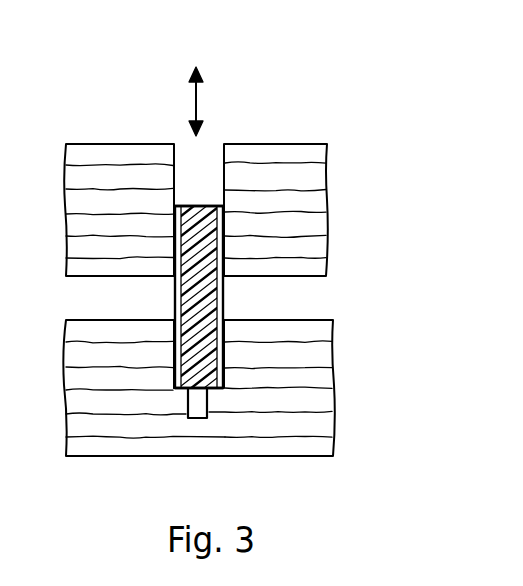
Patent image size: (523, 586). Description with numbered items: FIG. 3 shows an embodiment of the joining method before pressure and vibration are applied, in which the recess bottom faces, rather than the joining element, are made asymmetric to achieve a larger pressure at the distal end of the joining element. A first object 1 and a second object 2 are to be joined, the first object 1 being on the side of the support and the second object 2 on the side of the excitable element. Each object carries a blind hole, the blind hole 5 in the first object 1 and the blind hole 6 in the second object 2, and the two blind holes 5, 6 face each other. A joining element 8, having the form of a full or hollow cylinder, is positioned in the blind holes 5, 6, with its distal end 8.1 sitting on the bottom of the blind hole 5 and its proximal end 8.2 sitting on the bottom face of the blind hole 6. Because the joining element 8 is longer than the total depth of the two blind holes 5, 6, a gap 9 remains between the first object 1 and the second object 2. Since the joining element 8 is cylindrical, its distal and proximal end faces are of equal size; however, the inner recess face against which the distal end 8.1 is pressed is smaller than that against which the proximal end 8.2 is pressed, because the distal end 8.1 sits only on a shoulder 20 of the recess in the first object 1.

The first object 1 is at (318, 402).
The second object 2 is at (317, 200).
The blind hole 5 is at (176, 320).
The blind hole 6 is at (178, 230).
The joining element 8 is at (223, 305).
The distal joining element end 8.1 is at (208, 373).
The proximal joining element end 8.2 is at (196, 212).
The gap 9 is at (95, 300).
The shoulder 20 is at (183, 390).